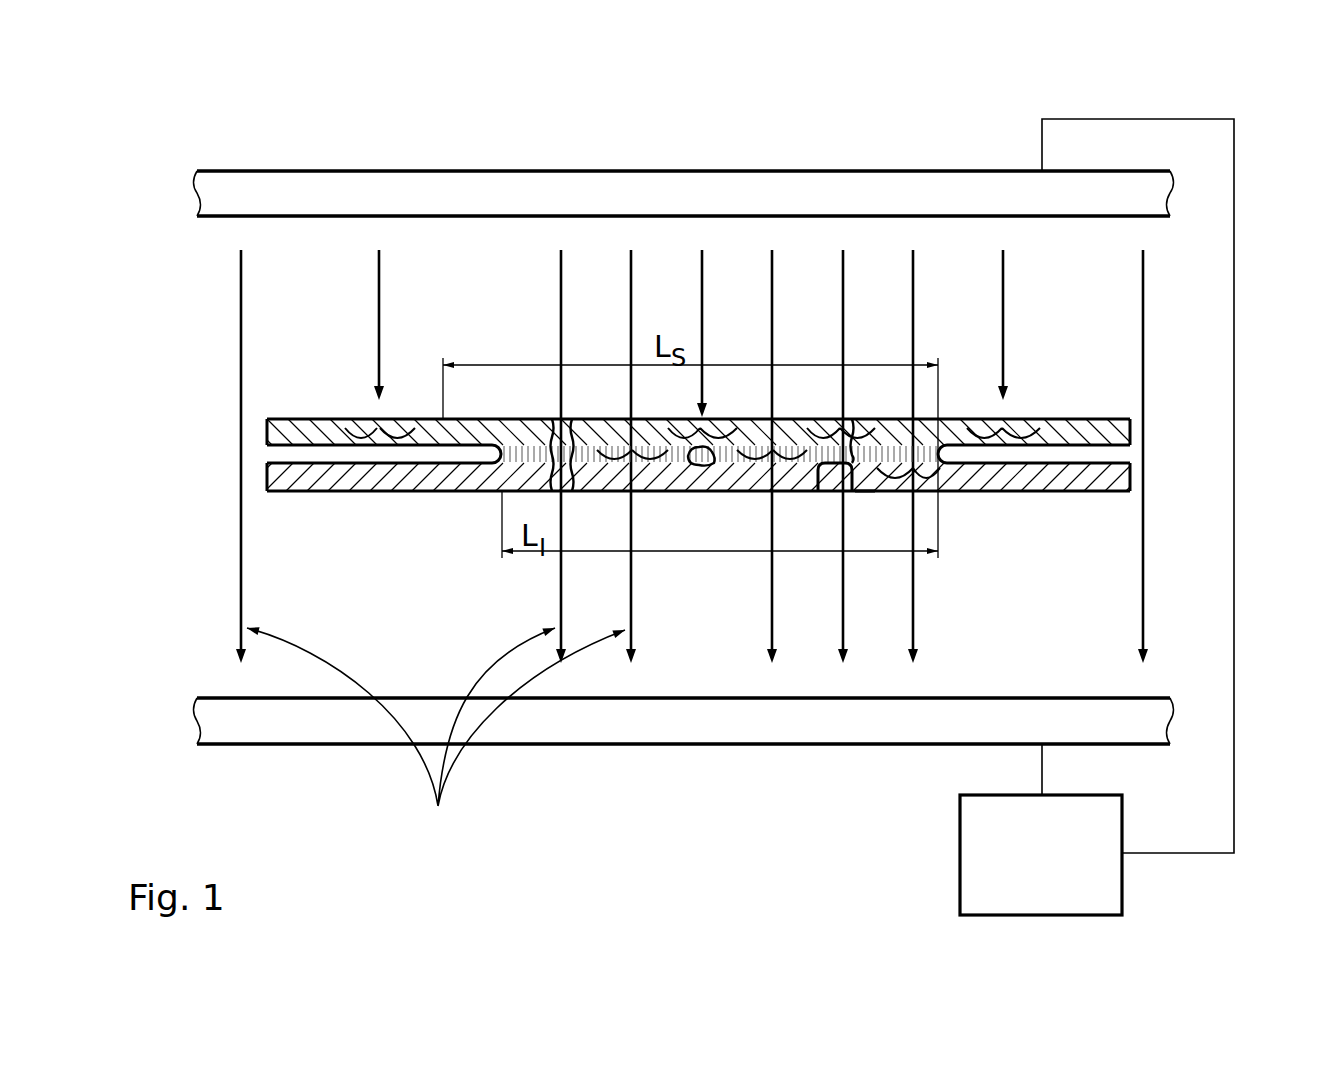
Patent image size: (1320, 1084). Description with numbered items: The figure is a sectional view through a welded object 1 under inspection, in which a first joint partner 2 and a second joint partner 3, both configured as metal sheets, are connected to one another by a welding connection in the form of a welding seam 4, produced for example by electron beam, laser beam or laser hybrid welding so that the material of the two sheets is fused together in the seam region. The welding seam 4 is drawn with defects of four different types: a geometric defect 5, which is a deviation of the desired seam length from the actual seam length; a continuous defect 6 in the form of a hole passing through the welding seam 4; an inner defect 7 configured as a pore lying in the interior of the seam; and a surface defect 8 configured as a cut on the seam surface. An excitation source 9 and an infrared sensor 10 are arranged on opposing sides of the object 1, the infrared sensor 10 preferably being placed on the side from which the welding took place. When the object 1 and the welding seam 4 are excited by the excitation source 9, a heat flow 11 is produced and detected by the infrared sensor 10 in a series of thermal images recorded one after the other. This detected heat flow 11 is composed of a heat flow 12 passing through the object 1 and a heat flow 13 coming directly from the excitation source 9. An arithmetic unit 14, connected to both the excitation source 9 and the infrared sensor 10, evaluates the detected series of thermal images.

The object 1 is at (229, 388).
The first joint partner 2 is at (272, 435).
The second joint partner 3 is at (272, 472).
The welding seam 4 is at (864, 505).
The geometric defect 5 is at (473, 405).
The continuous defect 6 is at (551, 405).
The inner defect 7 is at (719, 482).
The surface defect 8 is at (824, 505).
The excitation source 9 is at (663, 180).
The infrared sensor 10 is at (562, 737).
The heat flow 11 is at (436, 738).
The heat flow through the object 12 is at (632, 640).
The heat flow directly from the excitation source 13 is at (241, 578).
The arithmetic unit 14 is at (970, 862).